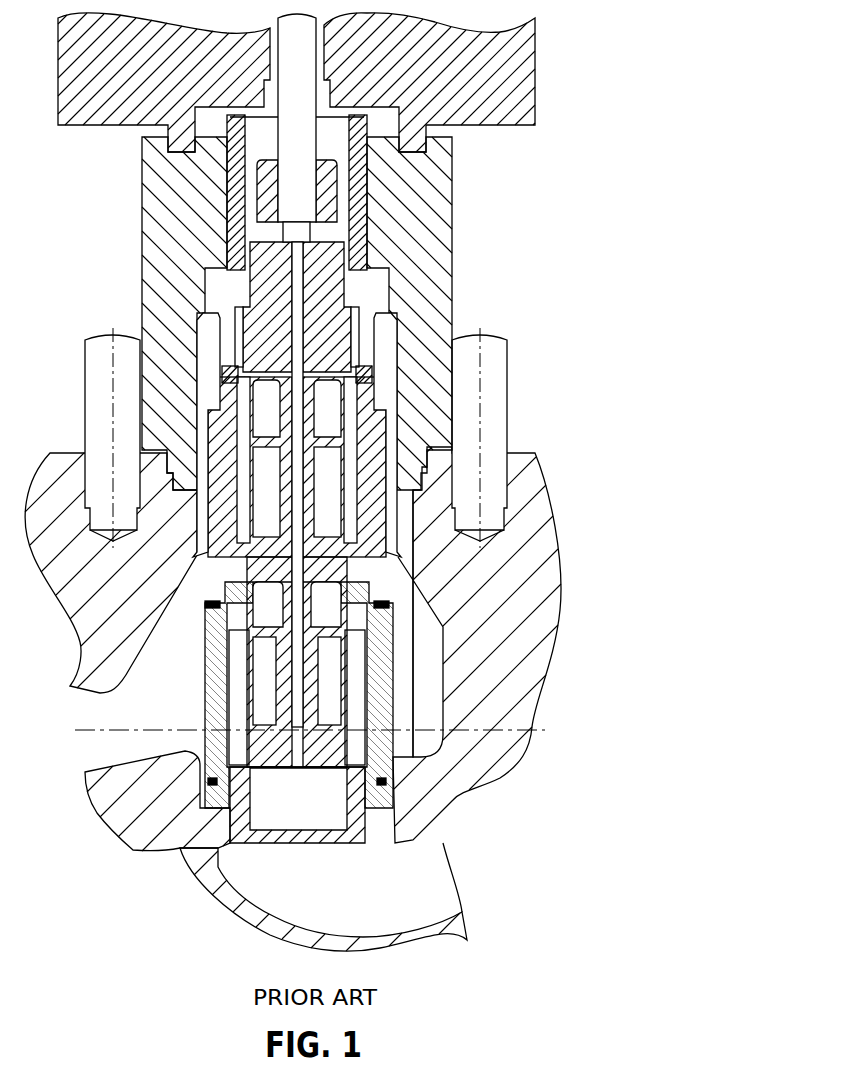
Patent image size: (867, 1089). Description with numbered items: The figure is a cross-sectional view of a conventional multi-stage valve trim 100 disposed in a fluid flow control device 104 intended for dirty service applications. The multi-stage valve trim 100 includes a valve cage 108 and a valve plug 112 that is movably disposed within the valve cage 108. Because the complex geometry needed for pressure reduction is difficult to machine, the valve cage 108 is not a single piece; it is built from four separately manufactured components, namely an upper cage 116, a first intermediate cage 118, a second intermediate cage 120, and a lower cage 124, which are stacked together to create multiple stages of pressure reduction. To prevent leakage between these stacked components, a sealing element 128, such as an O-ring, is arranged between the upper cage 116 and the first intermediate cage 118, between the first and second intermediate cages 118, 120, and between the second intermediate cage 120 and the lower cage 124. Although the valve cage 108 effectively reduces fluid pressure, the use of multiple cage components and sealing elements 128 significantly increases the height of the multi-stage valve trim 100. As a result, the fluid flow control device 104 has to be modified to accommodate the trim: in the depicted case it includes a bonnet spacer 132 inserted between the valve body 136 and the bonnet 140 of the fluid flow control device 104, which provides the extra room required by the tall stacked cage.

The multi-stage valve trim 100 is at (334, 482).
The fluid flow control device 104 is at (363, 285).
The valve cage 108 is at (432, 682).
The valve plug 112 is at (327, 298).
The upper cage 116 is at (357, 193).
The first intermediate cage 118 is at (377, 540).
The second intermediate cage 120 is at (397, 662).
The lower cage 124 is at (393, 798).
The sealing element 128 is at (372, 383).
The bonnet spacer 132 is at (142, 217).
The valve body 136 is at (530, 517).
The bonnet 140 is at (508, 63).